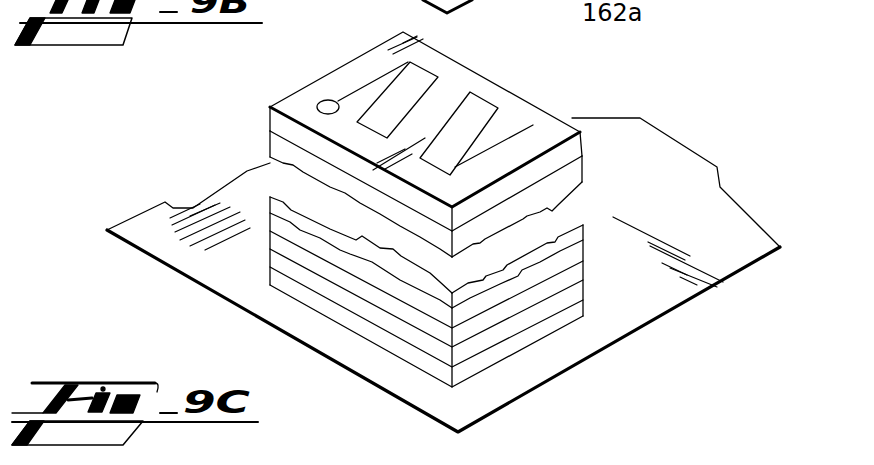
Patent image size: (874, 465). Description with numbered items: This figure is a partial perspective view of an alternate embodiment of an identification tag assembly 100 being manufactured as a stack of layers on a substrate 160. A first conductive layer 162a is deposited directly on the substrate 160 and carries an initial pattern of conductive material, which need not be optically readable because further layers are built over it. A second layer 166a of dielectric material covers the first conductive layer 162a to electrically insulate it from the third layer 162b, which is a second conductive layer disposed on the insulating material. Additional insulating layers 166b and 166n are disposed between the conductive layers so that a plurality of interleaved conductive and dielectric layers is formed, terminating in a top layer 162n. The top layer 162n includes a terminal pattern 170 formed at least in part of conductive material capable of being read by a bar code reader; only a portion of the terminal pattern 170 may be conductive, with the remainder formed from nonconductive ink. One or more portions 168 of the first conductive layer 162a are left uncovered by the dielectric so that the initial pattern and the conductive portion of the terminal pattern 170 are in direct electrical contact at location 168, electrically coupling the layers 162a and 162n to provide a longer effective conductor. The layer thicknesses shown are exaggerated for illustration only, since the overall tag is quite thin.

The stacked device assembly 100 is at (243, 96).
The substrate 160 is at (201, 230).
The first conductive layer 162a is at (584, 303).
The third layer 162b is at (584, 263).
The top layer 162n is at (584, 141).
The second layer 166a is at (584, 286).
The insulating layer 166b is at (584, 245).
The insulating layer 166n is at (584, 167).
The portion 168 is at (329, 100).
The terminal pattern 170 is at (492, 80).